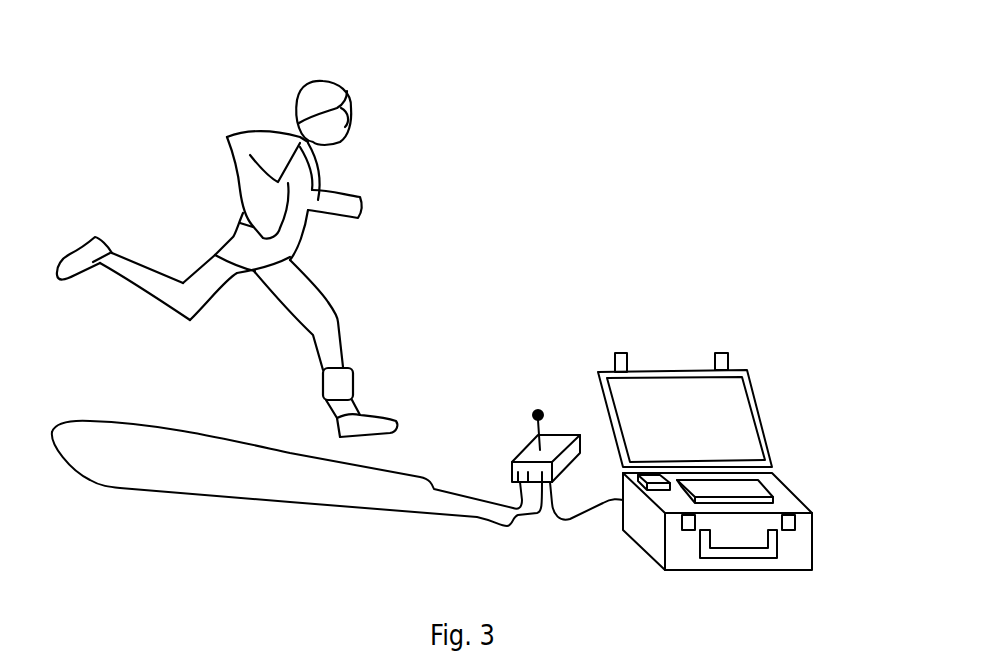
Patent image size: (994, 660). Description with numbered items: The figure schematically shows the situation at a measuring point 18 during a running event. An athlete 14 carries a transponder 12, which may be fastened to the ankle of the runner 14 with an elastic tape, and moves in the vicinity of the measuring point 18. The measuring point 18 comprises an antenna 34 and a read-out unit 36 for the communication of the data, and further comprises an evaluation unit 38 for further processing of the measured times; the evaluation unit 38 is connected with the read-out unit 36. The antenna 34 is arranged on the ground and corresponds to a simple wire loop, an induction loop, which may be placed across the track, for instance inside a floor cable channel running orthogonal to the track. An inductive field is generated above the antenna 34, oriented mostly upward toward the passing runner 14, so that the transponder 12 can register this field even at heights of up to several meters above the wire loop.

The transponder 12 is at (355, 387).
The athlete 14 is at (350, 112).
The measuring point 18 is at (585, 350).
The antenna 34 is at (193, 493).
The read-out unit 36 is at (512, 466).
The evaluation unit 38 is at (813, 548).